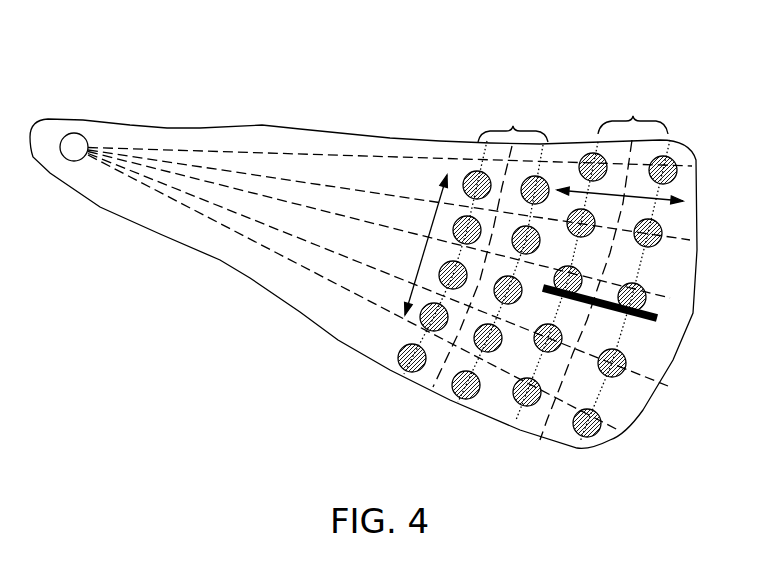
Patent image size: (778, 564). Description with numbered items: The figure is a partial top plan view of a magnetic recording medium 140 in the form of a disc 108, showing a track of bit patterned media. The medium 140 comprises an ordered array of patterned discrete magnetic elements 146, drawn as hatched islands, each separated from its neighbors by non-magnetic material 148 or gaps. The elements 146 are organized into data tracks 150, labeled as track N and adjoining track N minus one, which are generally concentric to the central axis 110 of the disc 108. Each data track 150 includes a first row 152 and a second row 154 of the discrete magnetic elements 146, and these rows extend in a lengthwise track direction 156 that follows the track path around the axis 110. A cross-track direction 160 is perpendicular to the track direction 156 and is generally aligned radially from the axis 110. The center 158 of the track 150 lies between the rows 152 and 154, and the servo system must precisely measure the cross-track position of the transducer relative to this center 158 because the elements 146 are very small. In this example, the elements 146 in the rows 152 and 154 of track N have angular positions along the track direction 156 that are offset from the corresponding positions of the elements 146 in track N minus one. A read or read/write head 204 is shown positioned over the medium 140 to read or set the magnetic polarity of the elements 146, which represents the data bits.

The disc 108 is at (210, 132).
The central axis 110 is at (75, 133).
The magnetic recording medium 140 is at (618, 69).
The discrete magnetic elements 146 is at (470, 173).
The non-magnetic material 148 is at (648, 278).
The data tracks 150 is at (566, 119).
The first row 152 is at (550, 153).
The second row 154 is at (392, 371).
The track direction 156 is at (434, 222).
The center of the track 158 is at (620, 210).
The cross-track direction 160 is at (683, 201).
The read or read/write head 204 is at (655, 317).